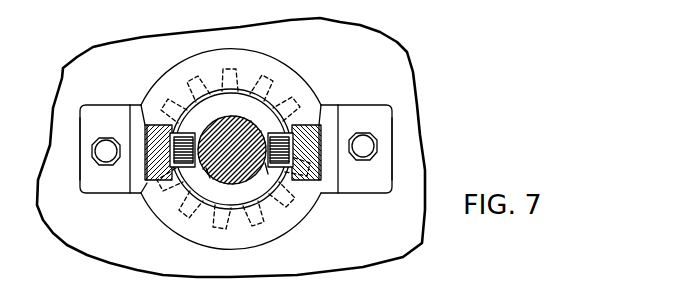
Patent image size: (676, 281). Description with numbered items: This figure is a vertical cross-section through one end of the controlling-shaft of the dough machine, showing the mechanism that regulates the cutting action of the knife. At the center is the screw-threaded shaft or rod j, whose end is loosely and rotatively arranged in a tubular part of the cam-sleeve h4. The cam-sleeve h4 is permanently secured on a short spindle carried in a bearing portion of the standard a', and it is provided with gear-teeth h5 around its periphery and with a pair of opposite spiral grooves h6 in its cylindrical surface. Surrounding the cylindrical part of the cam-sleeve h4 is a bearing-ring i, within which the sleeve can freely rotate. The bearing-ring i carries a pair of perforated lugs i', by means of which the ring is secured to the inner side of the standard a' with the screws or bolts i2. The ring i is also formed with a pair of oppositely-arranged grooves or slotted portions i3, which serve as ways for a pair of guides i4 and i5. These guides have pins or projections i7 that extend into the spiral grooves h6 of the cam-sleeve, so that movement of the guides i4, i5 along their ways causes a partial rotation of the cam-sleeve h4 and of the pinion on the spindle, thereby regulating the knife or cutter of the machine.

The standard a' is at (231, 147).
The bearing-ring i is at (231, 149).
The perforated lugs i' is at (227, 130).
The screws or bolts i2 is at (97, 157).
The grooves or slotted portions i3 is at (140, 114).
The guide i4 is at (152, 175).
The guide i5 is at (308, 177).
The pins or projections i7 is at (183, 146).
The cam-sleeve h4 is at (231, 149).
The gear-teeth h5 is at (232, 70).
The spiral grooves h6 is at (236, 181).
The screw-threaded shaft or rod j is at (232, 150).